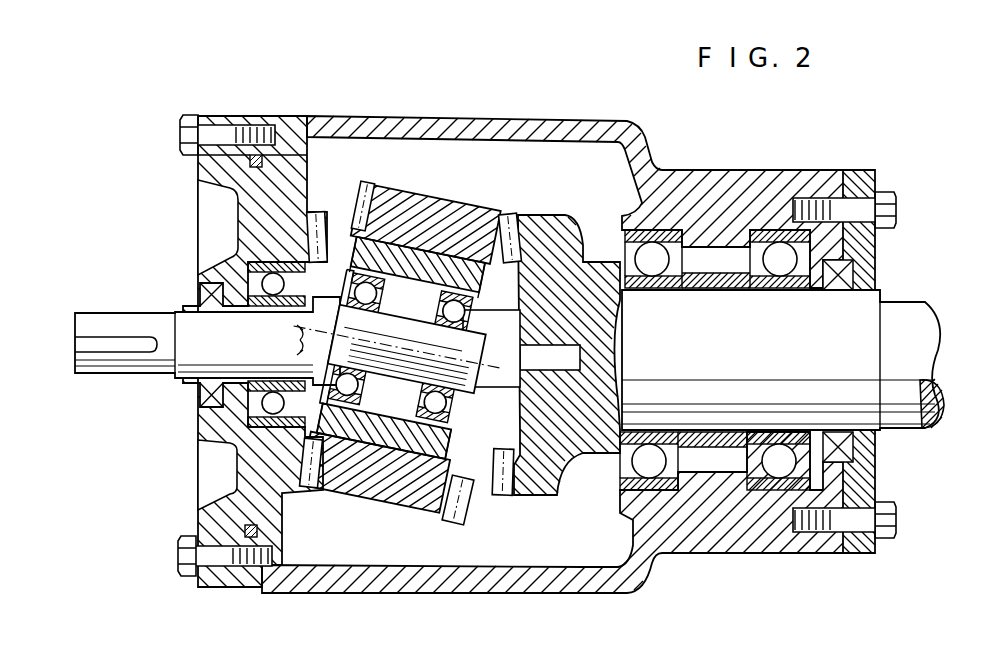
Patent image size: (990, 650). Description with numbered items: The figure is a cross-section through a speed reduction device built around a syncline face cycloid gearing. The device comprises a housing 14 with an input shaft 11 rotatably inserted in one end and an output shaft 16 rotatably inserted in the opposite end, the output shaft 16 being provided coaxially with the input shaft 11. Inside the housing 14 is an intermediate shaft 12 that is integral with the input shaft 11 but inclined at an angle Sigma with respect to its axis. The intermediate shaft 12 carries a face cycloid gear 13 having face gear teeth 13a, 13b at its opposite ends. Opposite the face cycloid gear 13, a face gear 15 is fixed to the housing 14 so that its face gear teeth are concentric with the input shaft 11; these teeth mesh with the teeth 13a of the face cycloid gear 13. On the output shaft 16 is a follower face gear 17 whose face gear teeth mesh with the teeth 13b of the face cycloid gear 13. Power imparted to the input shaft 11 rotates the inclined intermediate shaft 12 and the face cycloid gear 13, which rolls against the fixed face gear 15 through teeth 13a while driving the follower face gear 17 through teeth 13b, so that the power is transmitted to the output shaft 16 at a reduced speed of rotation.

The input shaft 11 is at (110, 322).
The intermediate shaft 12 is at (423, 257).
The face cycloid gear 13 is at (425, 205).
The face gear teeth 13a is at (350, 182).
The face gear teeth 13b is at (467, 503).
The housing 14 is at (552, 134).
The face gear 15 is at (245, 237).
The output shaft 16 is at (905, 317).
The follower face gear 17 is at (553, 237).